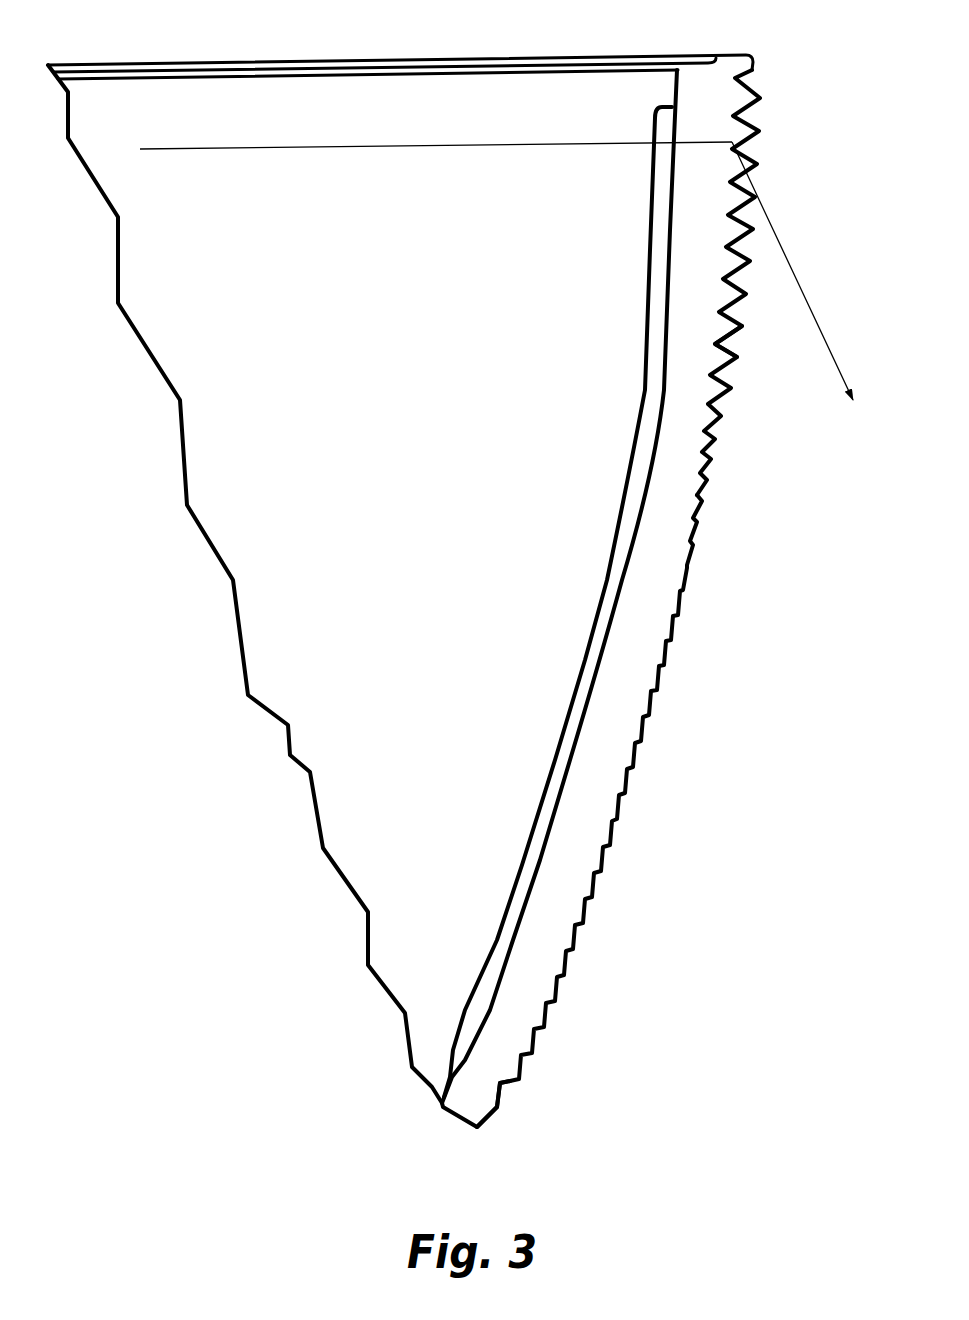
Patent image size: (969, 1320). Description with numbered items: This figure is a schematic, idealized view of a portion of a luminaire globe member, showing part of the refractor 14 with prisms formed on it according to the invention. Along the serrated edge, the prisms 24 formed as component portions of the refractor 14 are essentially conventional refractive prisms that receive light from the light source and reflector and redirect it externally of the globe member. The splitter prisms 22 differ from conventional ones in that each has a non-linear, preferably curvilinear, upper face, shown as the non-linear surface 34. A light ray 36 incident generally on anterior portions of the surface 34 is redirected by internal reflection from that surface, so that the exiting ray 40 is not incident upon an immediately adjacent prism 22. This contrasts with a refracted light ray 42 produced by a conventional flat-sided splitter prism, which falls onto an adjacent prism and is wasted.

The refractor 14 is at (572, 833).
The splitter prisms 22 is at (743, 368).
The prisms 24 is at (692, 600).
The non-linear surface 34 is at (737, 315).
The light ray 36 is at (373, 150).
The exiting ray 40 is at (785, 247).
The refracted light ray 42 is at (700, 163).